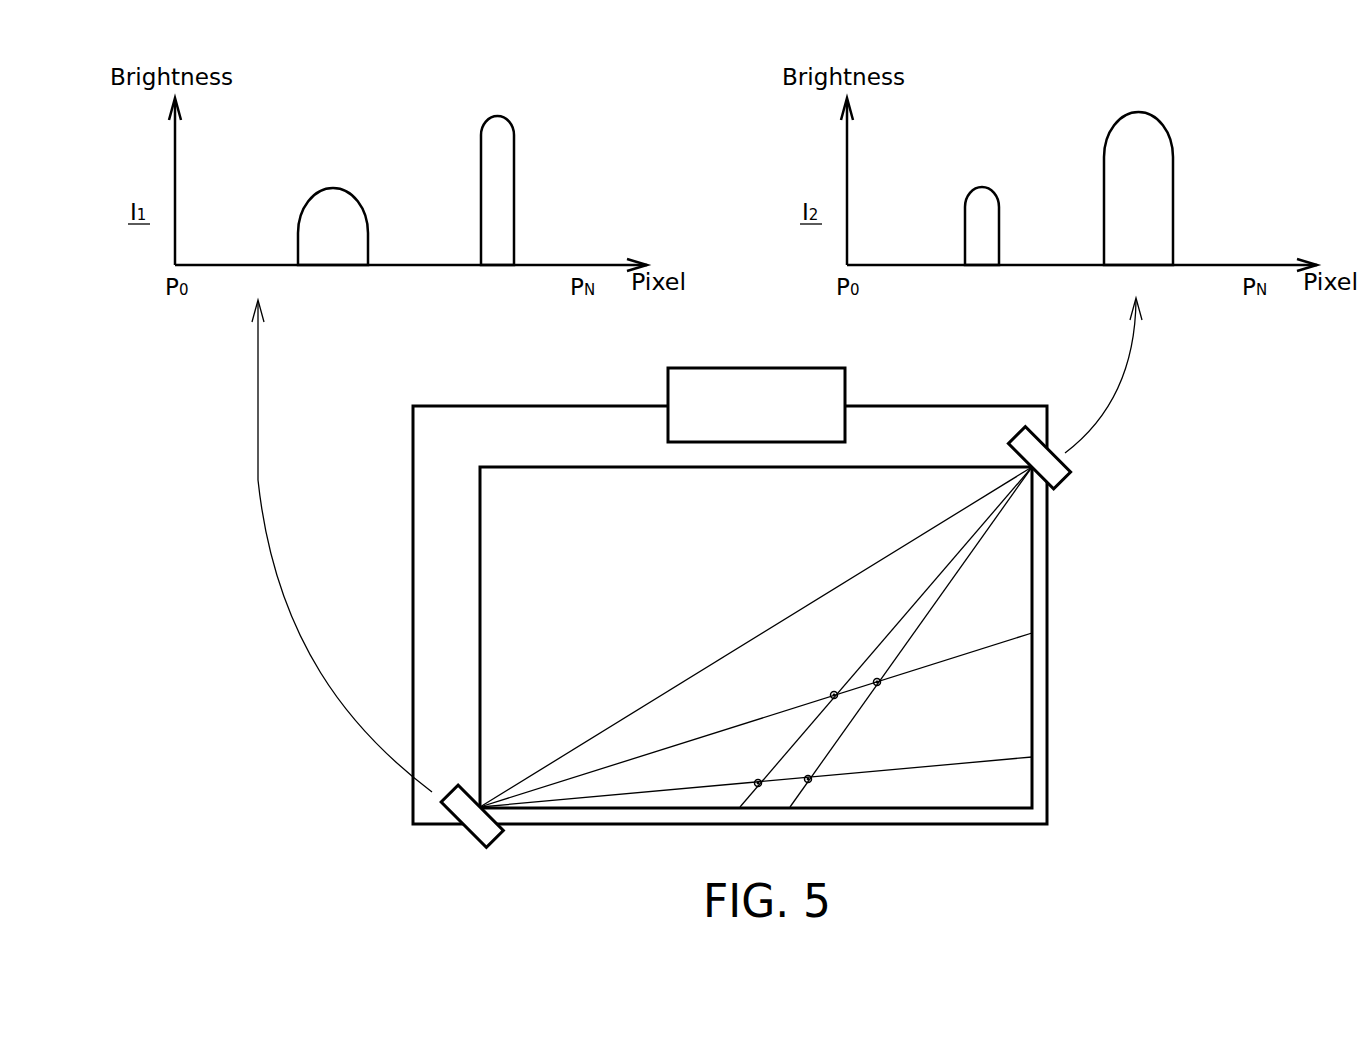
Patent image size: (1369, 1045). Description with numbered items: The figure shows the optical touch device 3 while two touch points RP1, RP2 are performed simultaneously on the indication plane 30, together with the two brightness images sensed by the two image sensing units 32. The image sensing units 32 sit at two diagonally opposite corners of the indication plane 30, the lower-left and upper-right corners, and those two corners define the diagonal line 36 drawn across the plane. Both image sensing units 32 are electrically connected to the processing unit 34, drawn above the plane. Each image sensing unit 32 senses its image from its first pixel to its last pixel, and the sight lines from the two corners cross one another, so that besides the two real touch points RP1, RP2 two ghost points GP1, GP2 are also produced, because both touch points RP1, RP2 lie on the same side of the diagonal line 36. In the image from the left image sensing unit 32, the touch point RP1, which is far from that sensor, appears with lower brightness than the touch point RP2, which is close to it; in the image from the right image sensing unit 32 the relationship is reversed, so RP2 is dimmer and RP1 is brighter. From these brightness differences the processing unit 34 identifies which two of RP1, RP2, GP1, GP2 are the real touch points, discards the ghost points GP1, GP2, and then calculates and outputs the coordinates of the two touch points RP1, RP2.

The optical touch device 3 is at (968, 358).
The indication plane 30 is at (1034, 585).
The image sensing unit 32 is at (1057, 472).
The processing unit 34 is at (753, 368).
The diagonal line 36 is at (782, 622).
The touch point RP1 is at (830, 693).
The touch point RP2 is at (812, 776).
The ghost point GP1 is at (881, 687).
The ghost point GP2 is at (757, 779).